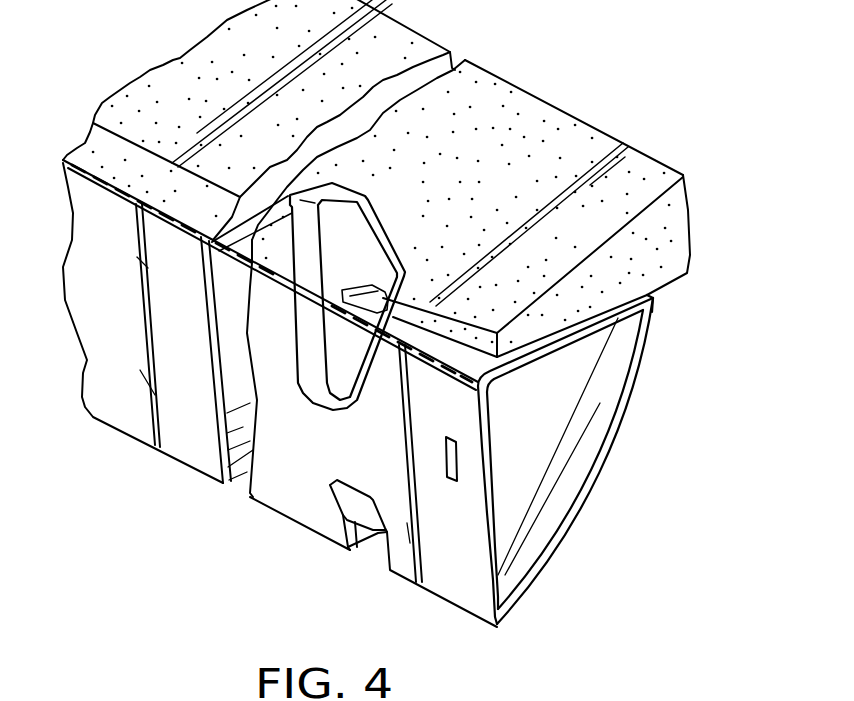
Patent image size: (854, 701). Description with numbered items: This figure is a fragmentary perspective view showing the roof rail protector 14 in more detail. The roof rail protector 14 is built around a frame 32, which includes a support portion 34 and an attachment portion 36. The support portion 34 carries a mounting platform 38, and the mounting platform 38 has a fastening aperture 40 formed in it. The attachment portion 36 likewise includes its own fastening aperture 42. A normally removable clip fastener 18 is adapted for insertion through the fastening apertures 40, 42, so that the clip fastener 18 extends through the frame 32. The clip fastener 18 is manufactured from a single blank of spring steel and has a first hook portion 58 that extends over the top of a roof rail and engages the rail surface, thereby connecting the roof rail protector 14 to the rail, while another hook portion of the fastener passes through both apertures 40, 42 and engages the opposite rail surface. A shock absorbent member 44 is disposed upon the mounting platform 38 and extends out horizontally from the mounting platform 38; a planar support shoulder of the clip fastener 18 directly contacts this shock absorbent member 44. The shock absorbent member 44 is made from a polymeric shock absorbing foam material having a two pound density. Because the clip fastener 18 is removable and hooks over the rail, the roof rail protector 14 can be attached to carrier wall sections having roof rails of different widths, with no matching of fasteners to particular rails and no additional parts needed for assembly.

The roof rail protector 14 is at (548, 183).
The clip fastener 18 is at (322, 377).
The frame 32 is at (610, 457).
The support portion 34 is at (655, 303).
The attachment portion 36 is at (487, 543).
The mounting platform 38 is at (553, 345).
The fastening aperture 40 is at (393, 308).
The fastening aperture 42 is at (367, 538).
The shock absorbent member 44 is at (677, 257).
The first hook portion 58 is at (375, 246).